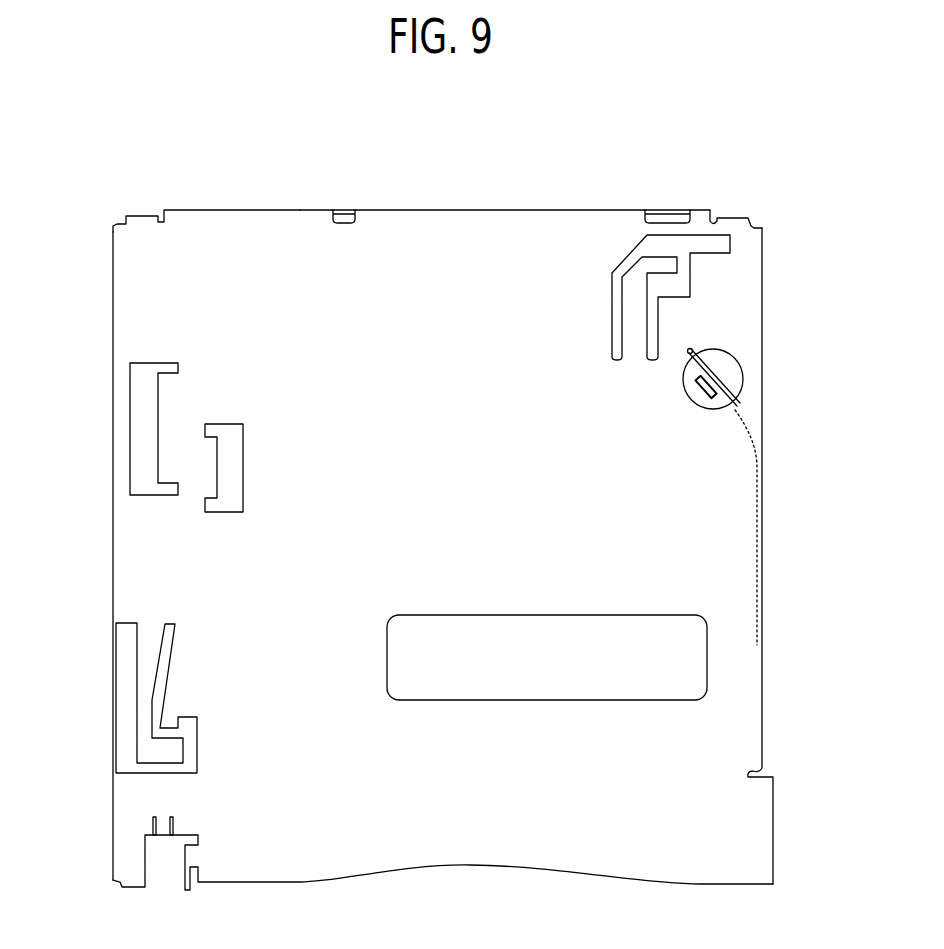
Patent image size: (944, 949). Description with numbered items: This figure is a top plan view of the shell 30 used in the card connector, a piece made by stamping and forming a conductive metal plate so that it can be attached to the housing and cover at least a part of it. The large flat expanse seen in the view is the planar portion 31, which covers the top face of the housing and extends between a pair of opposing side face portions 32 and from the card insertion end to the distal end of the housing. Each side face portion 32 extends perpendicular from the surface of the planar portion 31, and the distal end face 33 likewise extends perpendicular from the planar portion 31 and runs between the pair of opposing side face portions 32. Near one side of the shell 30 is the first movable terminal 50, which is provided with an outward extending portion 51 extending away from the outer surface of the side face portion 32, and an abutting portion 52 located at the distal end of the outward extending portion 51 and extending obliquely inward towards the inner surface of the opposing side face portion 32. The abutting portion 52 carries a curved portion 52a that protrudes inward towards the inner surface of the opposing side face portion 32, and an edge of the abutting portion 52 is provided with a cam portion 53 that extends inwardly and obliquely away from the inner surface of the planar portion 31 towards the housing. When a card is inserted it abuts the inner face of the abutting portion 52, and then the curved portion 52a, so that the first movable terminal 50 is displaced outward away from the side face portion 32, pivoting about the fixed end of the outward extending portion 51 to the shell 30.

The shell 30 is at (560, 200).
The planar portion 31 is at (420, 222).
The side face portion 32 is at (112, 533).
The distal end face 33 is at (222, 208).
The first movable terminal 50 is at (730, 380).
The outward extending portion 51 is at (750, 445).
The abutting portion 52 is at (715, 372).
The curved portion 52a is at (690, 362).
The cam portion 53 is at (691, 400).